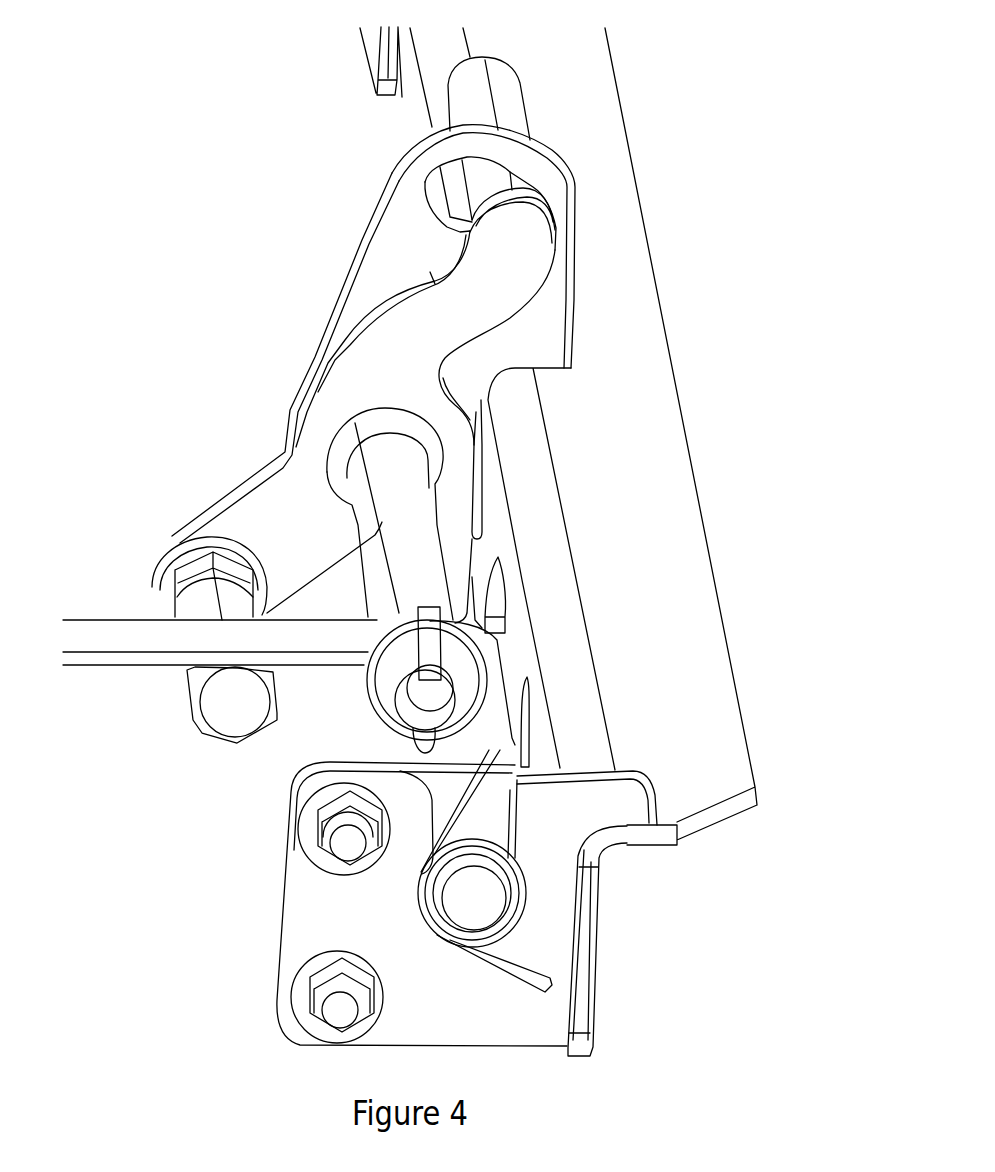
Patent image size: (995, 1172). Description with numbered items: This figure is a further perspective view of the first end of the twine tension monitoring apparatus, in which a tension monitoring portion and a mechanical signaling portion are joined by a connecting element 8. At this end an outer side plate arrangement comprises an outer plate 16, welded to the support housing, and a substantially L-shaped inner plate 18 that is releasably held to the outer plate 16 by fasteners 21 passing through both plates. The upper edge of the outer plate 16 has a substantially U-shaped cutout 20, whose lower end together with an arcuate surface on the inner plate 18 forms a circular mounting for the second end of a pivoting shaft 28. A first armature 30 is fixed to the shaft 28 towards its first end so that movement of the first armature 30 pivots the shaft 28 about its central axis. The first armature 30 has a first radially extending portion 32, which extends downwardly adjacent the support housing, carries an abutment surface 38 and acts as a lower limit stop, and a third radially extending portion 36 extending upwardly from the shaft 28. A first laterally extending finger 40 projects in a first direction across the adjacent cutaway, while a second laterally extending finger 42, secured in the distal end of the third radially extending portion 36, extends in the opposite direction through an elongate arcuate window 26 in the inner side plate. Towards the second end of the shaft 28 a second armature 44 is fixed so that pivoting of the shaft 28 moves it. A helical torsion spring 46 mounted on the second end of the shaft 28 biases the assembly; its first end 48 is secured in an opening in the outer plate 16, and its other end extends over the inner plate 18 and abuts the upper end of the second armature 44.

The connecting element 8 is at (115, 661).
The outer plate 16 is at (446, 1028).
The inner plate 18 is at (478, 823).
The U-shaped cutout 20 is at (517, 838).
The fasteners 21 is at (330, 1008).
The elongate arcuate window 26 is at (428, 187).
The pivoting shaft 28 is at (398, 563).
The first armature 30 is at (352, 366).
The first radially extending portion 32 is at (452, 515).
The third radially extending portion 36 is at (520, 246).
The abutment surface 38 is at (477, 450).
The first laterally extending finger 40 is at (192, 599).
The second laterally extending finger 42 is at (513, 108).
The second armature 44 is at (388, 743).
The helical torsion spring 46 is at (519, 895).
The first end of the helical torsion spring 48 is at (546, 978).